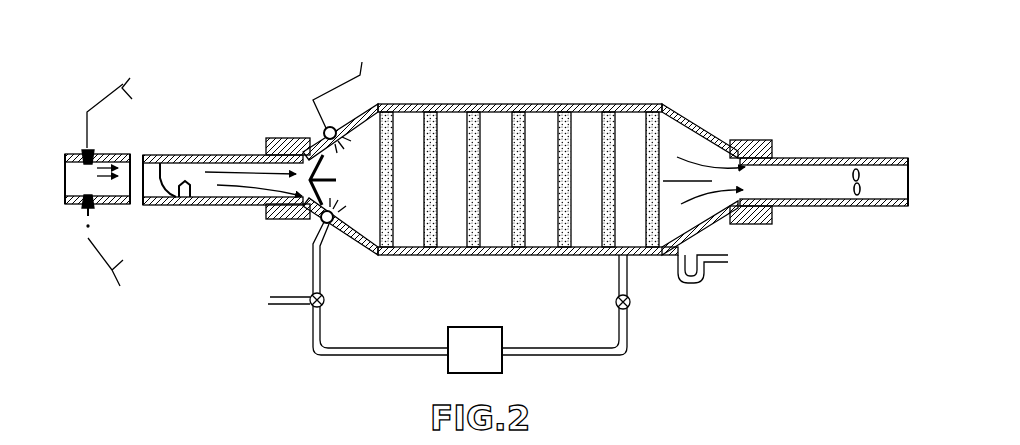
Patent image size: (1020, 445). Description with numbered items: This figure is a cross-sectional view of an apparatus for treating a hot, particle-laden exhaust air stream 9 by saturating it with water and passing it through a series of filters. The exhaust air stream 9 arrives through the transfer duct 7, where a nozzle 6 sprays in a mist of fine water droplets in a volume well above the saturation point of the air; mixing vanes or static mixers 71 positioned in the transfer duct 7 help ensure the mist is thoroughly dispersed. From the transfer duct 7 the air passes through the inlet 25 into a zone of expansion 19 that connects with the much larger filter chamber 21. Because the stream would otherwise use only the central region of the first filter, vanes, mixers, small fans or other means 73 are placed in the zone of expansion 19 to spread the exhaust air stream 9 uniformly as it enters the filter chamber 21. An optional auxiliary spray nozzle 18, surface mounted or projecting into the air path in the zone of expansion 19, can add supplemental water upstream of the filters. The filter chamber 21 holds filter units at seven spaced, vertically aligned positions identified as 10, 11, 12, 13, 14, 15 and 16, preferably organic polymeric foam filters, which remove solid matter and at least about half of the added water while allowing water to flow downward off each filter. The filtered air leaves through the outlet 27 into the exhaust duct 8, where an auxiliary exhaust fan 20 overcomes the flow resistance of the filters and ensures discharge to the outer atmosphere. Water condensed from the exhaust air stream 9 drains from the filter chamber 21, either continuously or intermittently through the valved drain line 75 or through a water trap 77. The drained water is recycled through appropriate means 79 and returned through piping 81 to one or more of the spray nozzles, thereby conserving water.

The nozzle 6 is at (95, 160).
The transfer duct 7 is at (216, 155).
The exhaust duct 8 is at (810, 160).
The exhaust air stream 9 is at (236, 183).
The filter position 10 is at (386, 106).
The filter position 11 is at (433, 112).
The filter position 12 is at (480, 122).
The filter position 13 is at (530, 112).
The filter position 14 is at (570, 120).
The filter position 15 is at (612, 118).
The filter position 16 is at (672, 117).
The auxiliary spray nozzle 18 is at (336, 124).
The zone of expansion 19 is at (360, 224).
The auxiliary exhaust fan 20 is at (868, 200).
The filter chamber 21 is at (480, 255).
The inlet 25 is at (286, 138).
The outlet 27 is at (760, 140).
The mixing vanes or static mixers 71 is at (176, 198).
The vanes, mixers, small fans or other means 73 is at (318, 222).
The valved drain line 75 is at (376, 360).
The water trap 77 is at (703, 278).
The recycling means 79 is at (477, 327).
The piping 81 is at (312, 280).